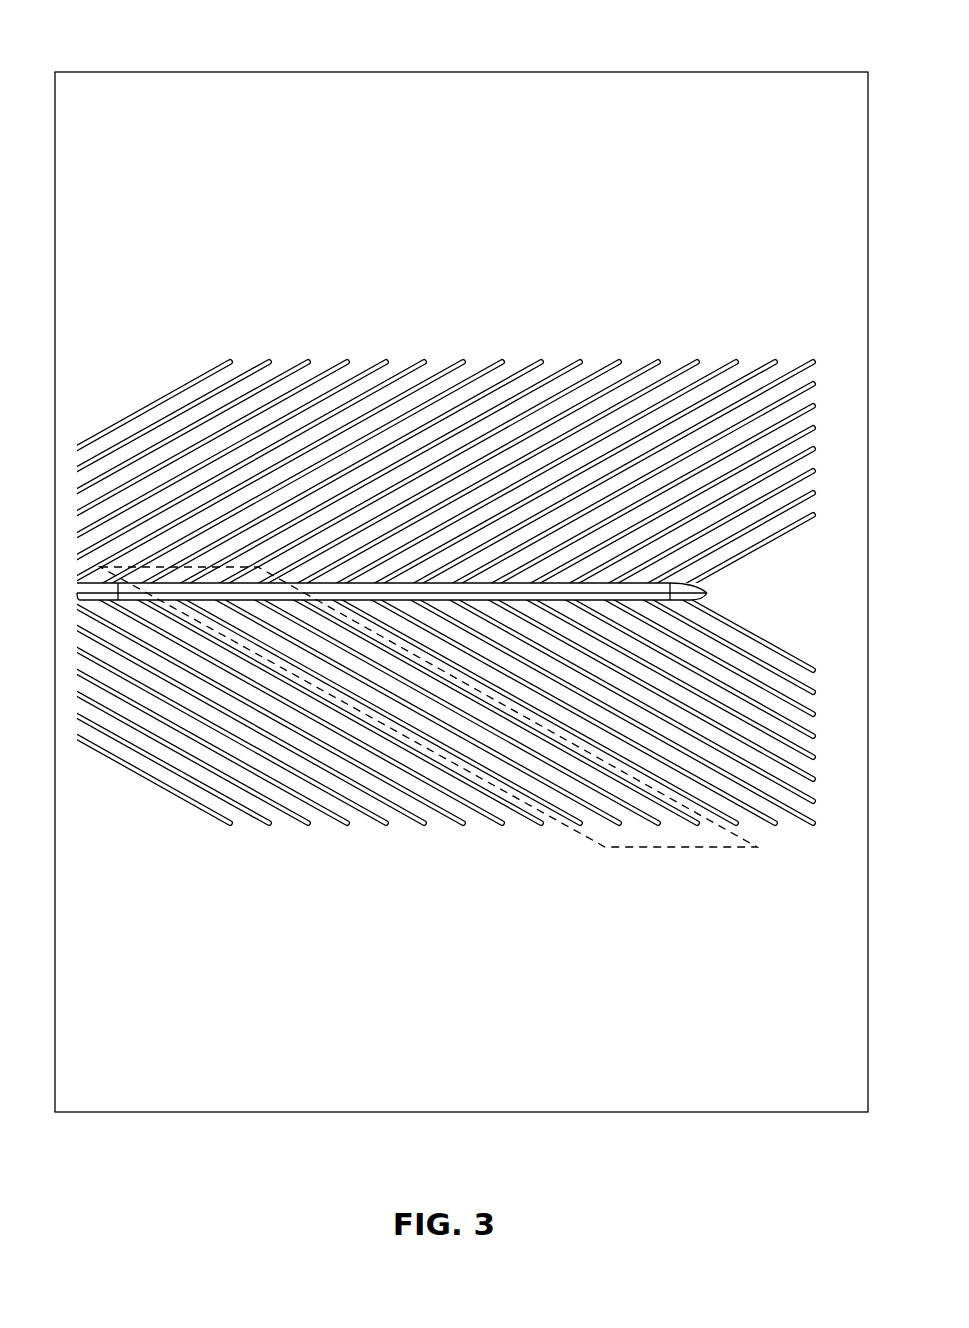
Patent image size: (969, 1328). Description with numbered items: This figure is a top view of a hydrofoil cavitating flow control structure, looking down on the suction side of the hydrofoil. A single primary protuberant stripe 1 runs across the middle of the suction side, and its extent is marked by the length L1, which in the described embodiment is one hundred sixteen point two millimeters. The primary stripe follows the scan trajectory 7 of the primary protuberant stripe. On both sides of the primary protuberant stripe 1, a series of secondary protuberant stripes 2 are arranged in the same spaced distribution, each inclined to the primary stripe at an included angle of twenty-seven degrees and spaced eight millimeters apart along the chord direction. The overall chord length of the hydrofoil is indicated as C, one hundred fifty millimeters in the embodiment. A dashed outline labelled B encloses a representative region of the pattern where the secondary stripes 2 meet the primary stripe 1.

The primary protuberant stripe 1 is at (282, 596).
The secondary protuberant stripe 2 is at (359, 665).
The scan trajectory of the primary protuberant stripe 7 is at (192, 596).
The region B is at (670, 850).
The chord length C is at (868, 72).
The length of the primary protuberant stripe L1 is at (77, 593).